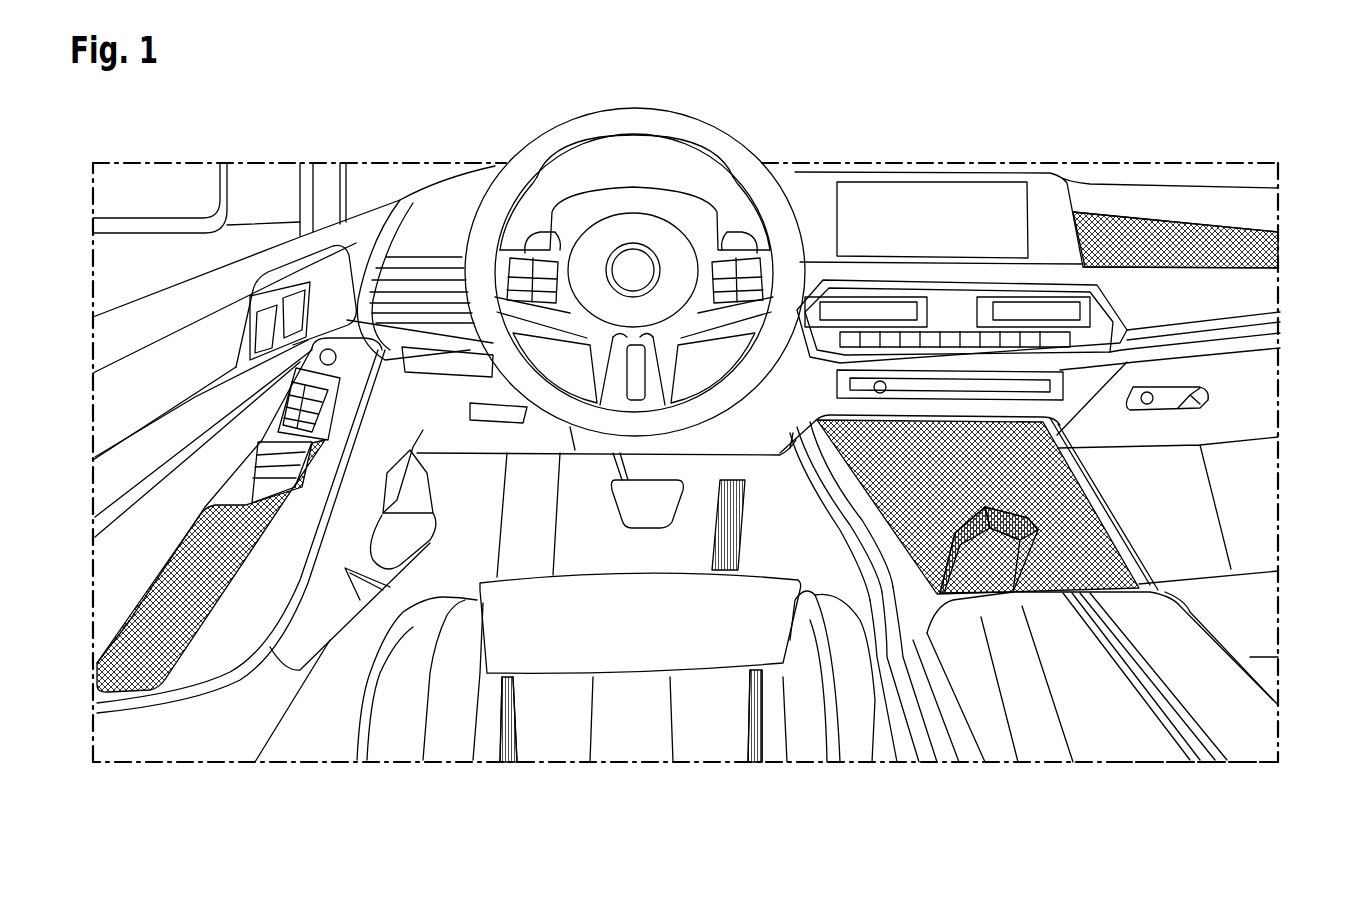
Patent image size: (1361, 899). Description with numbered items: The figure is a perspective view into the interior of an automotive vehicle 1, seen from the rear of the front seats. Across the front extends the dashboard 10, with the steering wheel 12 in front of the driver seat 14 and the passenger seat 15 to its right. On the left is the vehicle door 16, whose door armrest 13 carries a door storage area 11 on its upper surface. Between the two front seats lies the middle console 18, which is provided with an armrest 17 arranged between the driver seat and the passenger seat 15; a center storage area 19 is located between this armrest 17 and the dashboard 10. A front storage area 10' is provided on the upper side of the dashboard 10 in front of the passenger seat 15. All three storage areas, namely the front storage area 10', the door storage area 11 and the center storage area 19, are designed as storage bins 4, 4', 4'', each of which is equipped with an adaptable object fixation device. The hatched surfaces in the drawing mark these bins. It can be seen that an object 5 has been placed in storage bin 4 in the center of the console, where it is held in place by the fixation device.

The automotive vehicle 1 is at (842, 126).
The storage bin 4 is at (978, 340).
The storage bin 4' is at (1175, 177).
The storage bin 4'' is at (205, 641).
The object 5 is at (996, 545).
The dashboard 10 is at (813, 270).
The front storage area 10' is at (1175, 177).
The door storage area 11 is at (150, 673).
The steering wheel 12 is at (634, 110).
The door armrest 13 is at (230, 670).
The driver seat 14 is at (665, 762).
The passenger seat 15 is at (1283, 551).
The vehicle door 16 is at (273, 163).
The armrest 17 is at (1058, 722).
The middle console 18 is at (1114, 763).
The center storage area 19 is at (1078, 503).